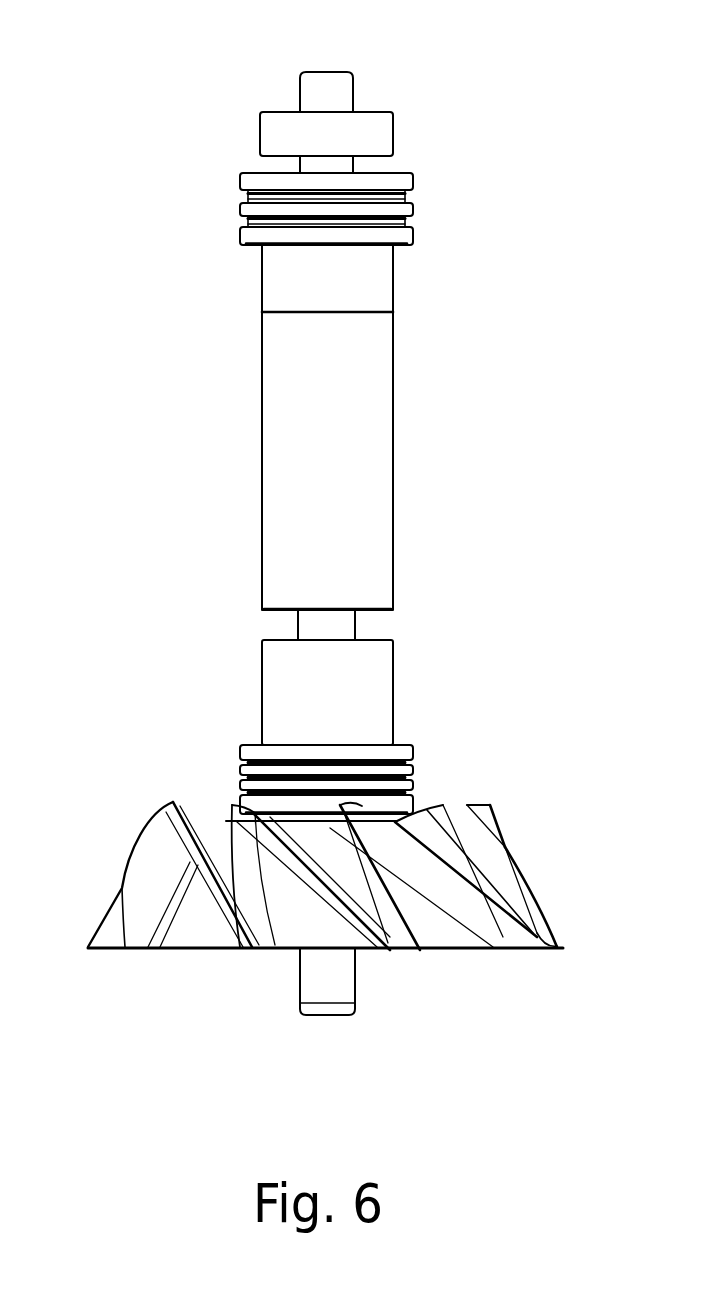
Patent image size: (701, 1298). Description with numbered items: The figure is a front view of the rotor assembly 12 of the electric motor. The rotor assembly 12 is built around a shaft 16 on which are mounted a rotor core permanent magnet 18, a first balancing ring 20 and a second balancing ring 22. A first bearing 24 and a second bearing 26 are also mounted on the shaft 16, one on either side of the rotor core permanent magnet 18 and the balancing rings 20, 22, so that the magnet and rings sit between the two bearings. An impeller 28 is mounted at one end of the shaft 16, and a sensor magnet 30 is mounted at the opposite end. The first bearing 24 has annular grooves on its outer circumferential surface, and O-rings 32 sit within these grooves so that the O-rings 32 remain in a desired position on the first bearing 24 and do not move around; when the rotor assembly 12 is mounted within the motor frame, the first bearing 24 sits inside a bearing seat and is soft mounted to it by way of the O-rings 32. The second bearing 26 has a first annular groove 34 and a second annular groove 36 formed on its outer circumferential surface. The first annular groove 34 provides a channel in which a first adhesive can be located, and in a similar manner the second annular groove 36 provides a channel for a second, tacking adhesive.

The rotor assembly 12 is at (135, 93).
The shaft 16 is at (297, 102).
The rotor core permanent magnet 18 is at (292, 465).
The first balancing ring 20 is at (292, 677).
The second balancing ring 22 is at (275, 280).
The first bearing 24 is at (425, 735).
The second bearing 26 is at (198, 215).
The impeller 28 is at (133, 887).
The sensor magnet 30 is at (375, 127).
The O-rings 32 is at (412, 785).
The first annular groove 34 is at (245, 197).
The second annular groove 36 is at (407, 218).